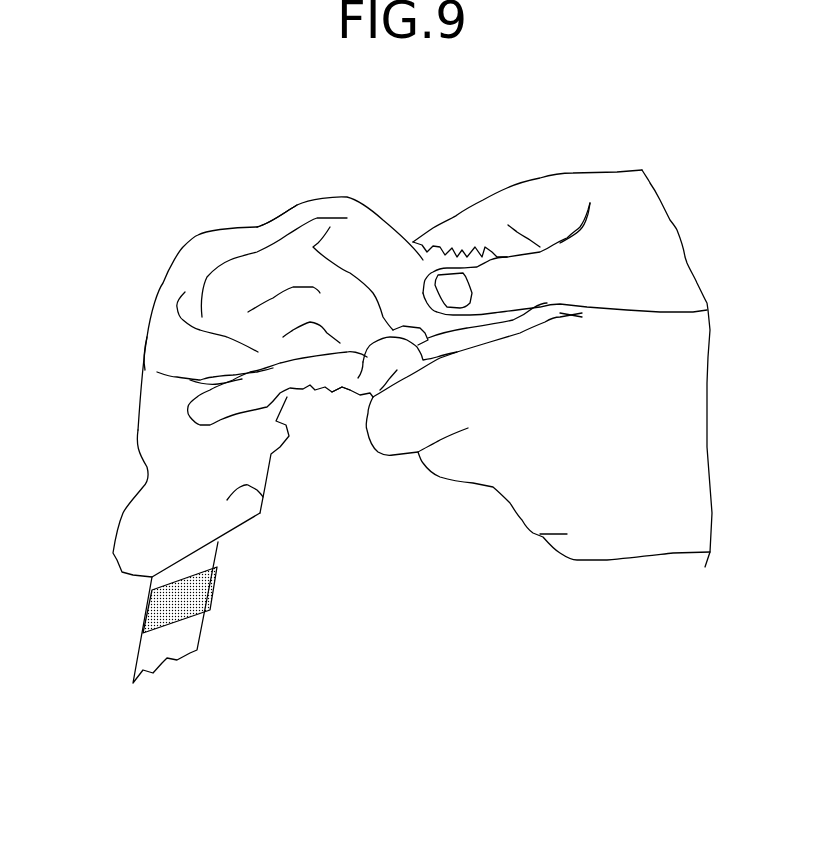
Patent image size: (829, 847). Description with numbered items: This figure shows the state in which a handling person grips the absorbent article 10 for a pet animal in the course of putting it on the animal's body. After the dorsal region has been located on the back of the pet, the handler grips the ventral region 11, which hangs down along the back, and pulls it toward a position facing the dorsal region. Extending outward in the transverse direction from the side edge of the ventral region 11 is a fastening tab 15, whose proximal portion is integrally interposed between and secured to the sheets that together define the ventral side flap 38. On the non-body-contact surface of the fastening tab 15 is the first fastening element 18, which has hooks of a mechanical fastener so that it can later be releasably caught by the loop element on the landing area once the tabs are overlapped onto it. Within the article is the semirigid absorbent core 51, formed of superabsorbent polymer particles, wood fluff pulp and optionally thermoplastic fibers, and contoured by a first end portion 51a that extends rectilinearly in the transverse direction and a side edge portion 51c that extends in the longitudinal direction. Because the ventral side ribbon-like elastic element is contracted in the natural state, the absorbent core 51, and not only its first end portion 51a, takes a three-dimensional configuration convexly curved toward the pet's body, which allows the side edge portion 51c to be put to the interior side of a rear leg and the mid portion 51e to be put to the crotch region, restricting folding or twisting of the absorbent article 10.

The absorbent article 10 is at (360, 157).
The ventral region 11 is at (168, 498).
The fastening tab 15 is at (173, 638).
The first fastening element 18 is at (190, 600).
The ventral side flap 38 is at (263, 497).
The absorbent core 51 is at (295, 308).
The first end portion 51a is at (148, 362).
The side edge portion 51c is at (345, 392).
The mid portion 51e is at (247, 238).